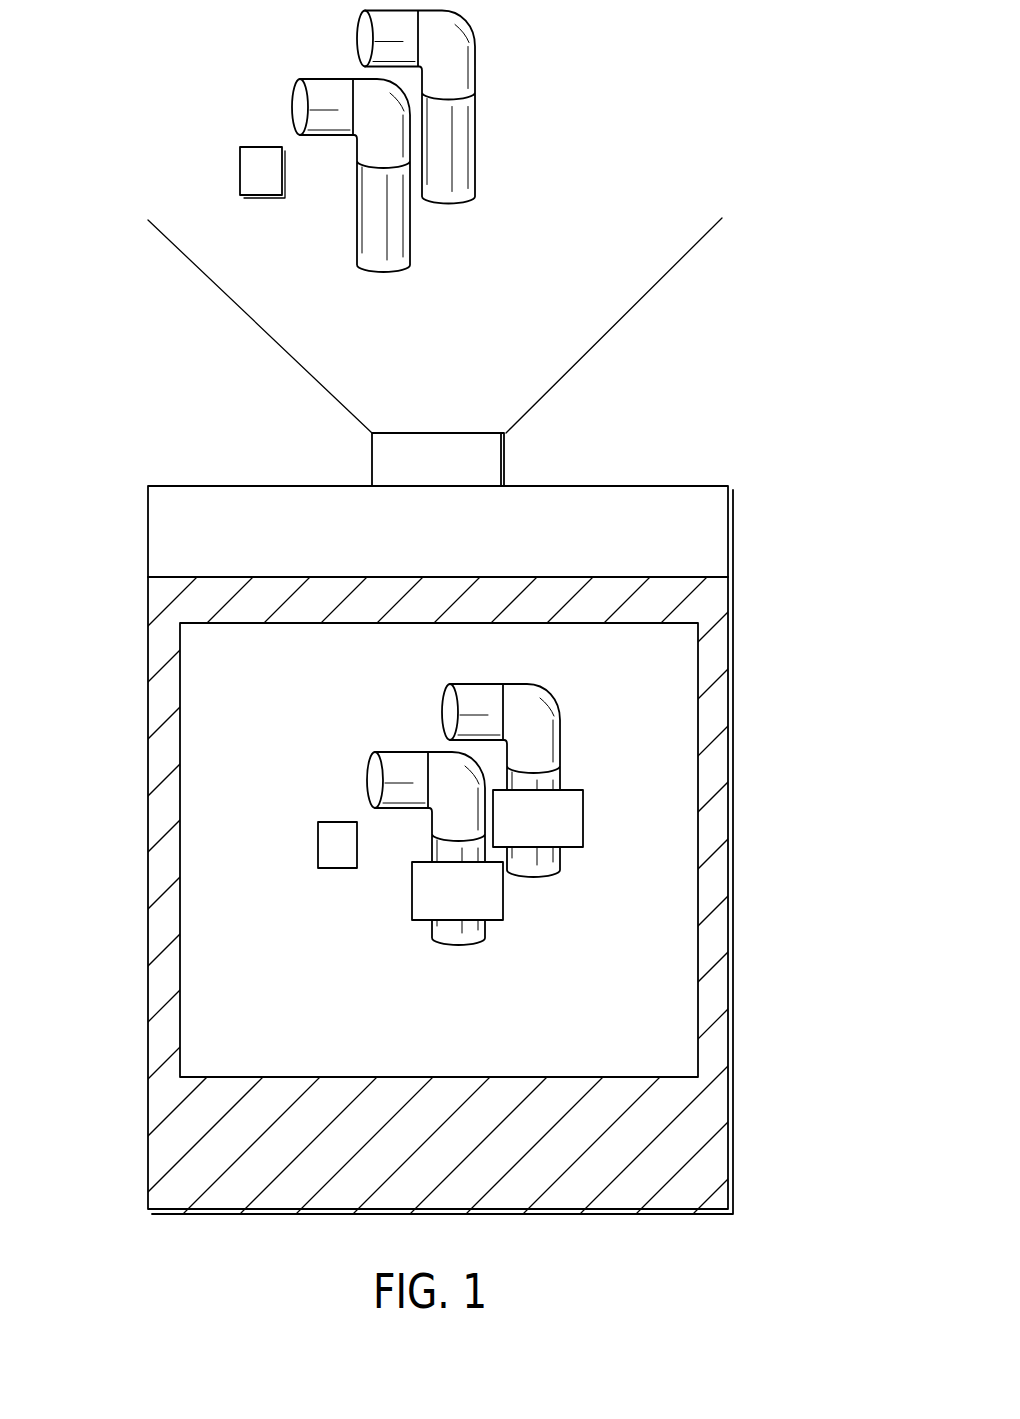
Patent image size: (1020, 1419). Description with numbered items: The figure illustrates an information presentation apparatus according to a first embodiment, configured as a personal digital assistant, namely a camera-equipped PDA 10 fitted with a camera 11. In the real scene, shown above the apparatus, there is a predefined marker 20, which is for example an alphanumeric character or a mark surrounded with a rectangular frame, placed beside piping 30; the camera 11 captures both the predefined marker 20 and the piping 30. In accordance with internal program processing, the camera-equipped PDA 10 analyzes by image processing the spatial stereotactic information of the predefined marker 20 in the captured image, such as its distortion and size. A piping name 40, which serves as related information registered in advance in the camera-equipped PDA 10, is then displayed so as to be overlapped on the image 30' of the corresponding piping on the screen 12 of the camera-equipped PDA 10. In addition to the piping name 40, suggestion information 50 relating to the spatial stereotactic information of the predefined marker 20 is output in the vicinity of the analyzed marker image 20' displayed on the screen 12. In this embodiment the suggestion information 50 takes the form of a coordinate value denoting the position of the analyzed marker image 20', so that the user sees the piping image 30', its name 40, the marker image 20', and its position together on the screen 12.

The camera-equipped PDA 10 is at (148, 888).
The camera 11 is at (375, 460).
The screen 12 is at (205, 702).
The predefined marker 20 is at (231, 172).
The analyzed marker image 20' is at (302, 845).
The piping 30 is at (413, 141).
The image of corresponding piping 30' is at (428, 814).
The piping name 40 is at (412, 904).
The suggestion information 50 is at (292, 893).